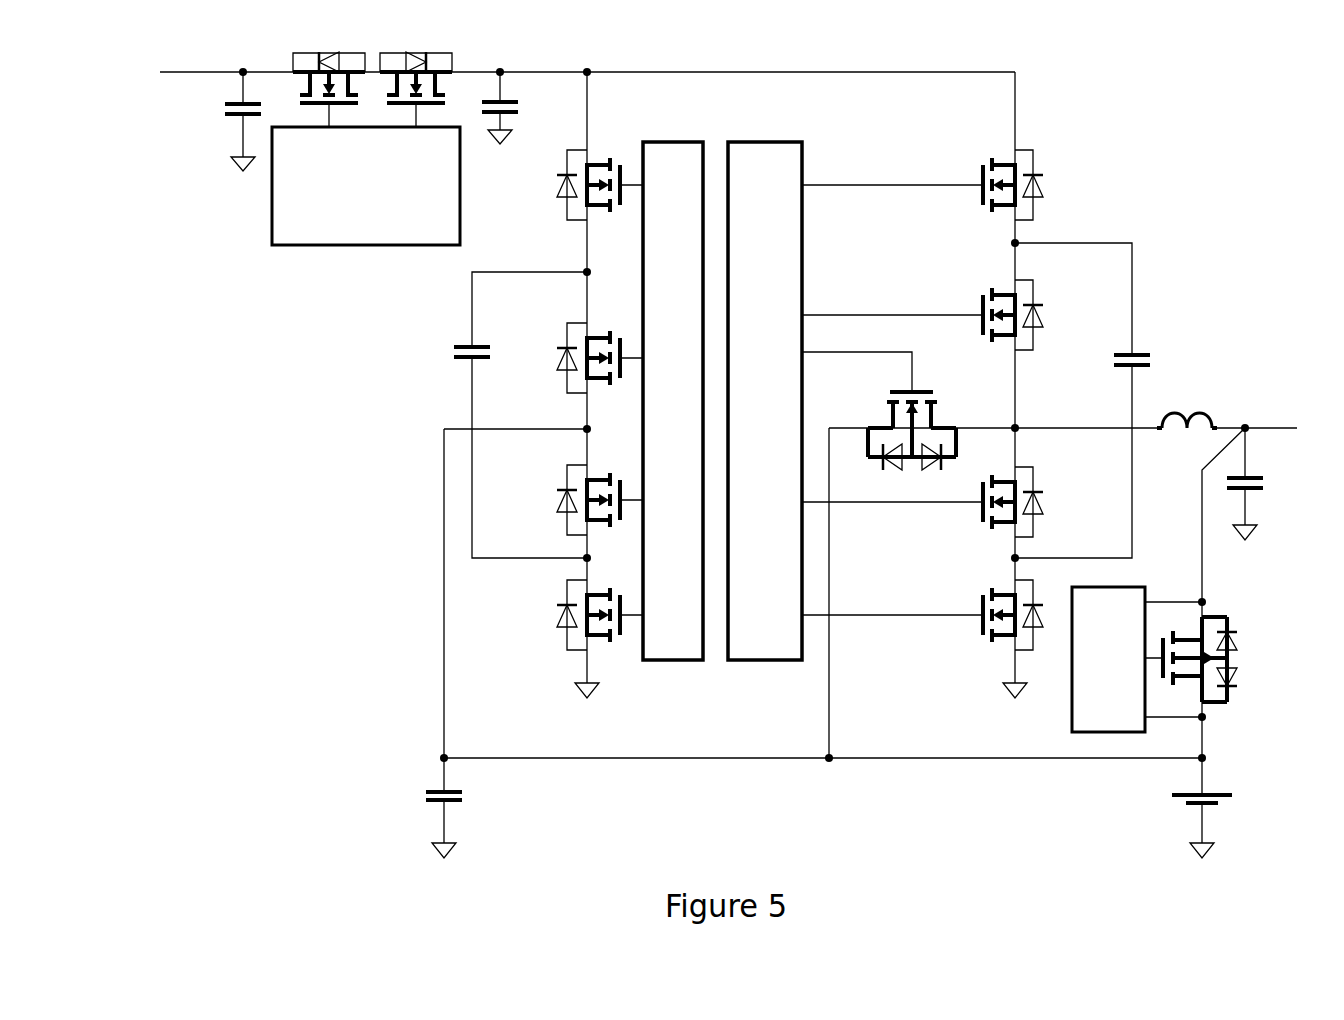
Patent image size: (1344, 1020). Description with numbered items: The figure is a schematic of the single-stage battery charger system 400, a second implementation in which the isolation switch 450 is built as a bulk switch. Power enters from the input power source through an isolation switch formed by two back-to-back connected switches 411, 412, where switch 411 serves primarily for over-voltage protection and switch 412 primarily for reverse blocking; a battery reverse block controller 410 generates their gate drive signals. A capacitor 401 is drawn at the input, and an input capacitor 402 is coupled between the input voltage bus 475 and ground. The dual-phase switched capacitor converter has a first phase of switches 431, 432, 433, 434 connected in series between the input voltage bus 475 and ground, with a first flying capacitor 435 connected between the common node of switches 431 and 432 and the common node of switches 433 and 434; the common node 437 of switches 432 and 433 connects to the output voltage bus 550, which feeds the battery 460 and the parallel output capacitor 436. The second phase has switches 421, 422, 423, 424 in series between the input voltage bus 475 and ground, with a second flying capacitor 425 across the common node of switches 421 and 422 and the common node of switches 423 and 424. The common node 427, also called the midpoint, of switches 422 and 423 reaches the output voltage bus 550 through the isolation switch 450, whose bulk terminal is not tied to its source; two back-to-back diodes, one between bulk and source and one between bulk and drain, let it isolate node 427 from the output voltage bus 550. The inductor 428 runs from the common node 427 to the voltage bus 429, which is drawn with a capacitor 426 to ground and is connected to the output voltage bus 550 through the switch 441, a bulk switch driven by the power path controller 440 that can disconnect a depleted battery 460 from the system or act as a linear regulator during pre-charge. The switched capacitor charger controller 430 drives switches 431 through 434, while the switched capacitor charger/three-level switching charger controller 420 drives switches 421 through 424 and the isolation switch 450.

The single-stage battery charger system 400 is at (1040, 62).
The input capacitor 401 is at (212, 108).
The input capacitor 402 is at (513, 87).
The battery reverse block controller 410 is at (317, 249).
The switch 411 is at (300, 44).
The switch 412 is at (435, 45).
The switched capacitor charger/three-level switching charger controller 420 is at (765, 136).
The switch 421 is at (1053, 183).
The switch 422 is at (1053, 293).
The switch 423 is at (1043, 524).
The switch 424 is at (995, 650).
The second flying capacitor 425 is at (1138, 344).
The output capacitor 426 is at (1257, 493).
The common node 427 is at (1025, 417).
The inductor 428 is at (1187, 433).
The voltage bus 429 is at (1252, 426).
The switched capacitor charger controller 430 is at (650, 138).
The switch 431 is at (555, 212).
The switch 432 is at (557, 342).
The switch 433 is at (557, 522).
The switch 434 is at (605, 647).
The first flying capacitor 435 is at (460, 333).
The output capacitor 436 is at (437, 807).
The common node 437 is at (578, 423).
The power path controller 440 is at (1065, 700).
The switch 441 is at (1250, 658).
The isolation switch 450 is at (940, 413).
The battery 460 is at (1208, 808).
The input voltage bus 475 is at (768, 68).
The output voltage bus 550 is at (853, 757).